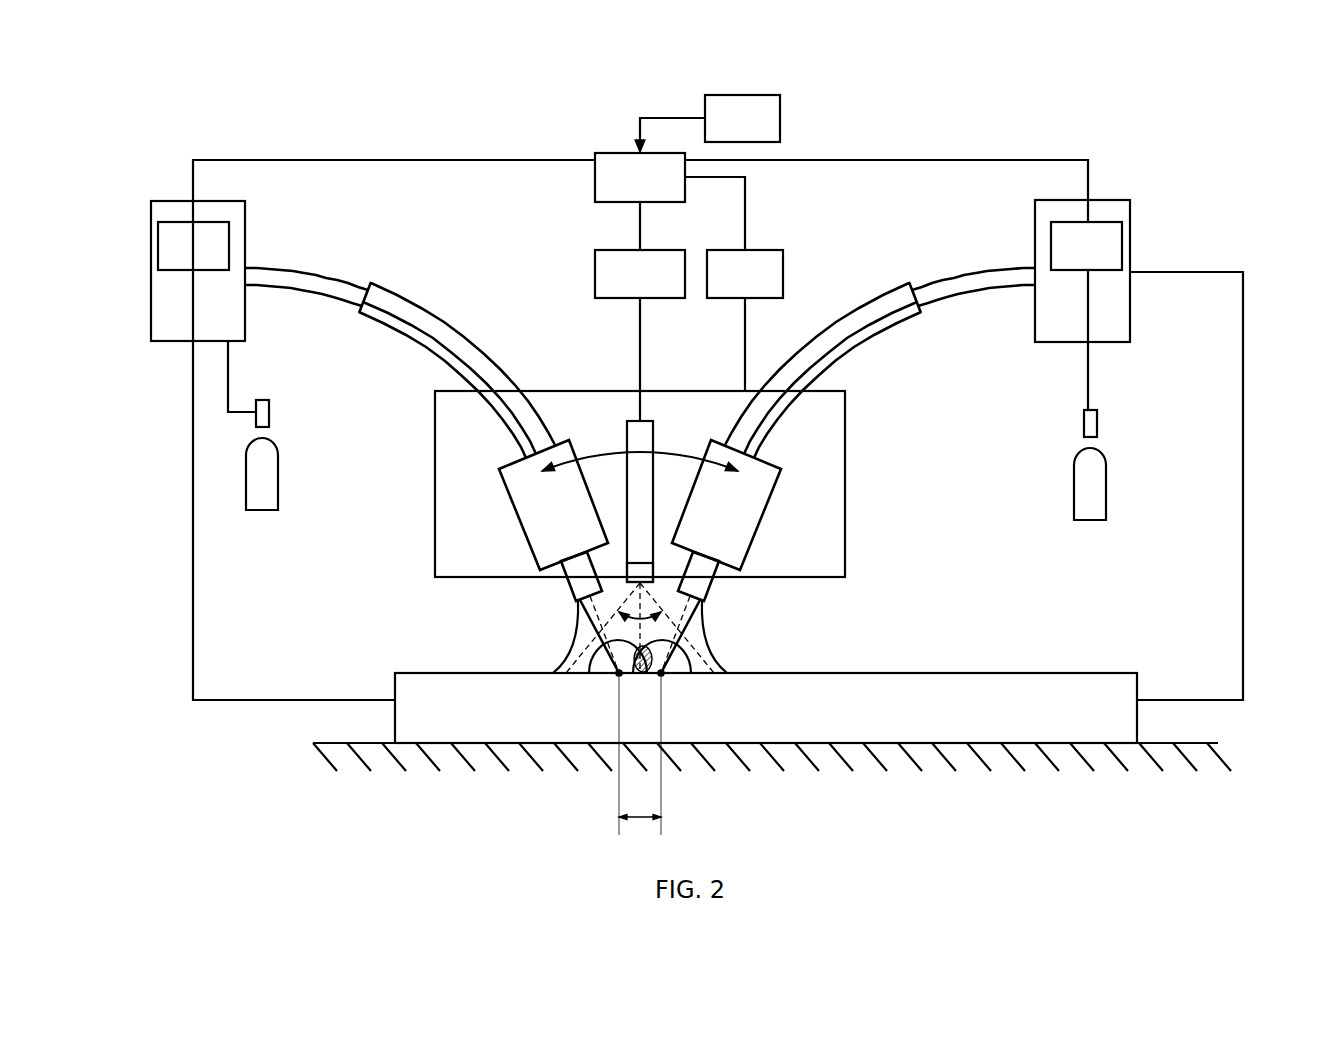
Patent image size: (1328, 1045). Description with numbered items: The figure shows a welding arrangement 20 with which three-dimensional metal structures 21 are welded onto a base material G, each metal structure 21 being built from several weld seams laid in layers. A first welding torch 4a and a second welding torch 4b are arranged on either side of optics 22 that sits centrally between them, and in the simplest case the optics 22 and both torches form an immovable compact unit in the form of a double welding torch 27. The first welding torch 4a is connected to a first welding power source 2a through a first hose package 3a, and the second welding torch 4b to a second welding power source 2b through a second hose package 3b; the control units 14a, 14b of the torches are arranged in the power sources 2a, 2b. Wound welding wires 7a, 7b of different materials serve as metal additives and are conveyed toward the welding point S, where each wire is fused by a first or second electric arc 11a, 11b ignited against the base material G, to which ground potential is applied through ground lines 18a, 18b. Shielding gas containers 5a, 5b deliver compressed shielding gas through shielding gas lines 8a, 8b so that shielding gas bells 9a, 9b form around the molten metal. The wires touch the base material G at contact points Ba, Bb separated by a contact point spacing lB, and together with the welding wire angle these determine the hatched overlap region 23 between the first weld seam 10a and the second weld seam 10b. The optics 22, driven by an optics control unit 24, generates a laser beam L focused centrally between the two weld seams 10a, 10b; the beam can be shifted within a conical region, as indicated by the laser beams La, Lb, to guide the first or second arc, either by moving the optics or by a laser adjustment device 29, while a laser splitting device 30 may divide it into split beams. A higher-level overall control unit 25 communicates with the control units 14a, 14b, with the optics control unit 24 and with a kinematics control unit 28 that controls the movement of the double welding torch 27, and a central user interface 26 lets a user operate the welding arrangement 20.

The welding arrangement 20 is at (1212, 100).
The first welding power source 2a is at (167, 318).
The second welding power source 2b is at (1113, 315).
The control unit of the first welding torch 14a is at (172, 242).
The control unit of the second welding torch 14b is at (1104, 250).
The first shielding gas line 8a is at (345, 272).
The second shielding gas line 8b is at (935, 272).
The first hose package 3a is at (524, 410).
The second hose package 3b is at (755, 410).
The first shielding gas container 5a is at (268, 470).
The second shielding gas container 5b is at (1085, 480).
The first welding torch 4a is at (568, 492).
The second welding torch 4b is at (712, 492).
The first welding wire 7a is at (557, 520).
The second welding wire 7b is at (723, 520).
The double welding torch 27 is at (845, 563).
The optics 22 is at (636, 420).
The laser adjustment device 29 is at (638, 536).
The laser splitting device 30 is at (631, 568).
The first electric arc 11a is at (580, 610).
The second electric arc 11b is at (700, 610).
The first shielding gas bell 9a is at (583, 638).
The second shielding gas bell 9b is at (697, 638).
The overlap region 23 is at (595, 662).
The first weld seam 10a is at (582, 676).
The second weld seam 10b is at (698, 676).
The first ground line 18a is at (235, 701).
The second ground line 18b is at (1243, 632).
The three-dimensional metal structure 21 is at (632, 682).
The optics control unit 24 is at (612, 273).
The higher-level overall control unit 25 is at (612, 177).
The central user interface 26 is at (741, 108).
The kinematics control unit 28 is at (762, 262).
The base material G is at (866, 693).
The welding point S is at (603, 702).
The laser beam L is at (645, 676).
The laser beam position for guiding the first arc La is at (566, 674).
The laser beam position for guiding the second arc Lb is at (714, 674).
The first contact point Ba is at (607, 689).
The second contact point Bb is at (677, 689).
The contact point spacing lB is at (640, 766).